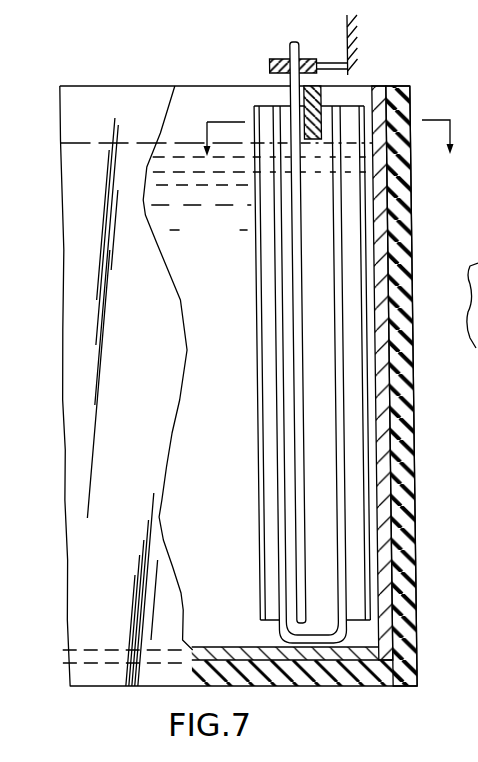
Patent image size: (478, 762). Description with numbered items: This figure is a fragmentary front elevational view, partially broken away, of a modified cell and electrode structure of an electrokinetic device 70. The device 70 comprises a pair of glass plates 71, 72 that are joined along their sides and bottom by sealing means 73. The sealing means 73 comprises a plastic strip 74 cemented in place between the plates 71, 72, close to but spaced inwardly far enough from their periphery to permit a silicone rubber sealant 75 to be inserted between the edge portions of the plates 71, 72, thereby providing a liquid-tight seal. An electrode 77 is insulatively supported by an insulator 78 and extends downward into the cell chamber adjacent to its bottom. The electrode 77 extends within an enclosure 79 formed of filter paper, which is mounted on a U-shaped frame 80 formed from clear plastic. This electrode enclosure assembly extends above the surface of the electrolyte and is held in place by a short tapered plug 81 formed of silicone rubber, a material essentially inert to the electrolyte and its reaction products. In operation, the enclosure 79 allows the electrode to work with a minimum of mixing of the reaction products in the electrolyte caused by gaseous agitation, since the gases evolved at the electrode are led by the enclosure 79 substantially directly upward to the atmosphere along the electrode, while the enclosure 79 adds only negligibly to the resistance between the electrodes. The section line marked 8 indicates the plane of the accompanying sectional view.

The electrokinetic device 70 is at (127, 62).
The glass plate 71 is at (80, 253).
The glass plate 72 is at (193, 97).
The sealing means 73 is at (420, 597).
The plastic strip 74 is at (385, 518).
The silicone rubber sealant 75 is at (405, 560).
The electrode 77 is at (295, 366).
The insulator 78 is at (277, 59).
The enclosure 79 is at (253, 252).
The U-shaped frame 80 is at (278, 468).
The tapered plug 81 is at (318, 97).
The section line 8- 8 is at (328, 157).